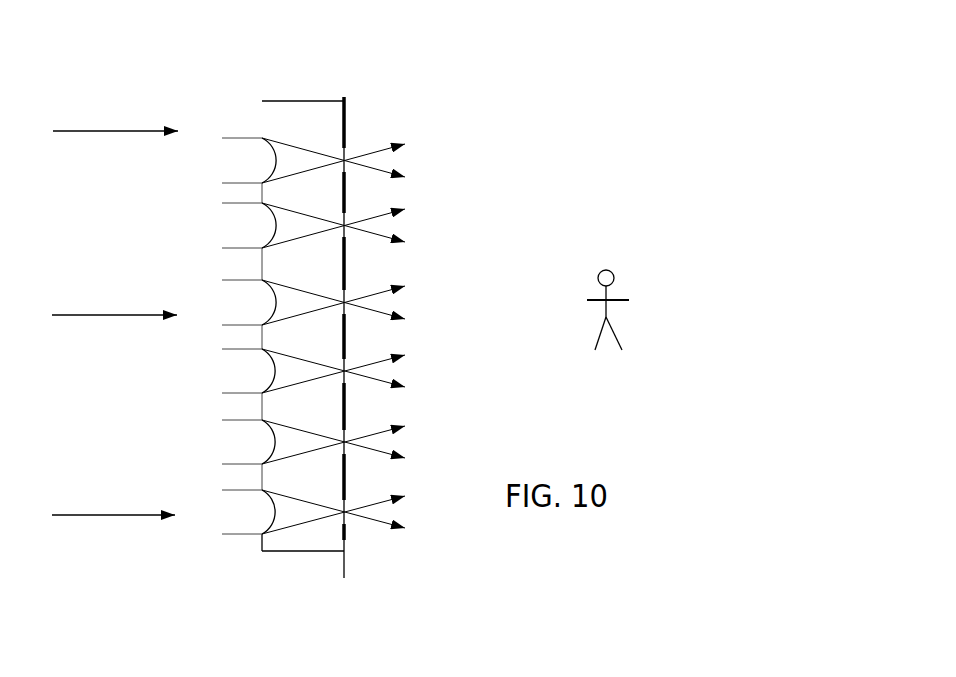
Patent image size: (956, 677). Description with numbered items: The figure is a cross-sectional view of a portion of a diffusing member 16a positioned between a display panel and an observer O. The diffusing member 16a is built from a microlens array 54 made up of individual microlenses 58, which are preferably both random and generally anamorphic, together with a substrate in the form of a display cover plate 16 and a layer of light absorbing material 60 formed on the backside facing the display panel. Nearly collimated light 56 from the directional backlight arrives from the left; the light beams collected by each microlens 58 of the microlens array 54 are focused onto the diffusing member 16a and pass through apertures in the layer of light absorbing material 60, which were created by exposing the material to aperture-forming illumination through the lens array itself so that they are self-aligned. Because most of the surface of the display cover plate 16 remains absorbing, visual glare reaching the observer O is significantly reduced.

The display cover plate 16 is at (348, 567).
The diffusing member 16a is at (304, 100).
The microlens array 54 is at (250, 156).
The collimated light 56 is at (120, 131).
The microlens 58 is at (250, 512).
The layer of light absorbing material 60 is at (343, 537).
The observer O is at (633, 283).